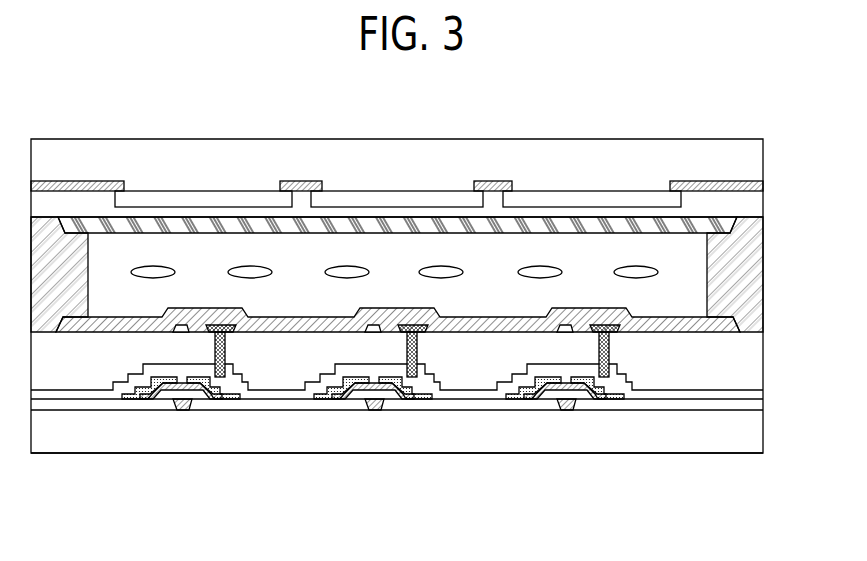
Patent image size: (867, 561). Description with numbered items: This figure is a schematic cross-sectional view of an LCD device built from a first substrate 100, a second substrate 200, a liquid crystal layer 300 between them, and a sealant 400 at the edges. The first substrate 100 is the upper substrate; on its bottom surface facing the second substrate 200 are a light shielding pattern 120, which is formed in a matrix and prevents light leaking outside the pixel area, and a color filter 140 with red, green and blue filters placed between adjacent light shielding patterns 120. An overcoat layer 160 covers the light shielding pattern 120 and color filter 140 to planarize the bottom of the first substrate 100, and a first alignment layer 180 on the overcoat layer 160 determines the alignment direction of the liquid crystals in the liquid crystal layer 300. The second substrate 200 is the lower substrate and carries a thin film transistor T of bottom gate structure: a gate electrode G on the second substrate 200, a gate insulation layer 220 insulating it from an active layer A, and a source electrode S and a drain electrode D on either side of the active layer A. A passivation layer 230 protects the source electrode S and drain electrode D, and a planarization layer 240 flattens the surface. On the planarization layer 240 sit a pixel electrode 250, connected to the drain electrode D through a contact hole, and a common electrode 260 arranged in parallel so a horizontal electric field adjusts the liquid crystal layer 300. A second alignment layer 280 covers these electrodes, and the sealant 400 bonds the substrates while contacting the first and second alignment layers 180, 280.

The first substrate 100 is at (752, 161).
The light shielding pattern 120 is at (763, 187).
The color filter 140 is at (212, 196).
The overcoat layer 160 is at (752, 207).
The first alignment layer 180 is at (645, 228).
The second substrate 200 is at (752, 430).
The gate insulation layer 220 is at (752, 406).
The passivation layer 230 is at (752, 390).
The planarization layer 240 is at (752, 362).
The pixel electrode 250 is at (417, 353).
The common electrode 260 is at (373, 333).
The second alignment layer 280 is at (675, 325).
The liquid crystal layer 300 is at (658, 272).
The sealant 400 is at (737, 247).
The source electrode S is at (130, 400).
The active layer A is at (152, 400).
The gate electrode G is at (183, 410).
The drain electrode D is at (227, 400).
The thin film transistor T is at (240, 505).